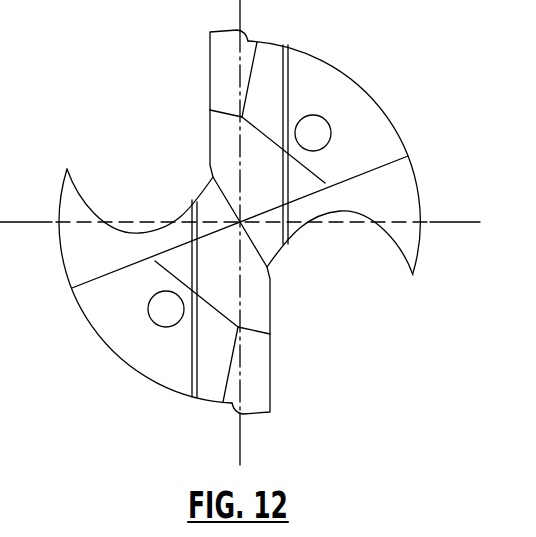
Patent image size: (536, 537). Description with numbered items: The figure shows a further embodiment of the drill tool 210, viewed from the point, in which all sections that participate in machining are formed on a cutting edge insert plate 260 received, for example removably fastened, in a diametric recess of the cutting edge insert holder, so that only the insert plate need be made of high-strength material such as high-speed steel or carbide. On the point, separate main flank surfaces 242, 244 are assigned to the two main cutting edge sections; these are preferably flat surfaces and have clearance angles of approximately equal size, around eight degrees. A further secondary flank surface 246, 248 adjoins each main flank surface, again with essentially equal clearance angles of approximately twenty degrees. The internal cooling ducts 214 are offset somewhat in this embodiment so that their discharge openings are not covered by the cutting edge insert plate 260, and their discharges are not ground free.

The tool 210 is at (400, 88).
The internal cooling ducts 214 is at (313, 133).
The main flank surface 242 is at (222, 143).
The main flank surface 244 is at (222, 63).
The secondary flank surface 246 is at (260, 175).
The secondary flank surface 248 is at (310, 85).
The cutting edge insert plate 260 is at (282, 340).